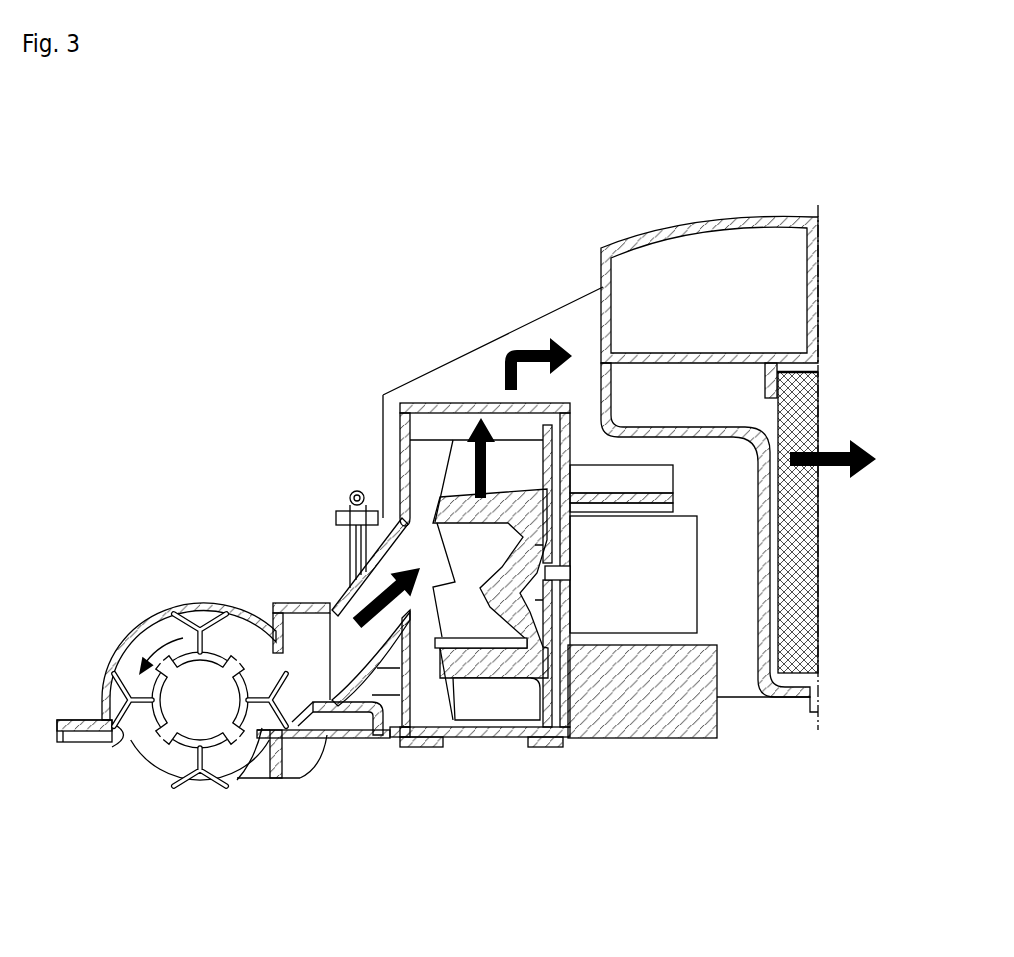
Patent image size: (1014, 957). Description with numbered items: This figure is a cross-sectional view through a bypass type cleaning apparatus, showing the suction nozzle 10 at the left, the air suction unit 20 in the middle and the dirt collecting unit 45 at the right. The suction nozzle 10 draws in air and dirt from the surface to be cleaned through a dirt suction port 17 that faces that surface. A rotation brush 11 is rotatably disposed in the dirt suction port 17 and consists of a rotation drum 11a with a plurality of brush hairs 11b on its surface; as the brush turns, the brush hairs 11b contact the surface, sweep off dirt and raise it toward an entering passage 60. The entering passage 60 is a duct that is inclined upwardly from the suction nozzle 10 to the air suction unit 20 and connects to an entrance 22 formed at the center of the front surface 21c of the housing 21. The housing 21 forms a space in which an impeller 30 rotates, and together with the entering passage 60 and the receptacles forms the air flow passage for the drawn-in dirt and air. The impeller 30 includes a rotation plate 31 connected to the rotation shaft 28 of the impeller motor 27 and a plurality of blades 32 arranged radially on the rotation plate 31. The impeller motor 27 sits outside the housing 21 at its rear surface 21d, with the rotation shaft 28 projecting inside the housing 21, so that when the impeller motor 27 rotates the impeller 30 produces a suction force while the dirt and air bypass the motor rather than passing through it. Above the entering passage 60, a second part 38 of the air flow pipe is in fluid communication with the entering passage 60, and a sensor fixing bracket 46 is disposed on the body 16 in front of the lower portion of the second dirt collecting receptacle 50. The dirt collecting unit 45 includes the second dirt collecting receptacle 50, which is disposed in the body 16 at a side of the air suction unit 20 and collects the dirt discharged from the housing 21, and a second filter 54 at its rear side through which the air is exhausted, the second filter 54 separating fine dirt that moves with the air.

The suction nozzle 10 is at (103, 631).
The rotation brush 11 is at (200, 752).
The rotation drum 11a is at (185, 718).
The brush hairs 11b is at (190, 782).
The body 16 is at (498, 340).
The dirt suction port 17 is at (122, 742).
The air suction unit 20 is at (582, 553).
The housing 21 is at (470, 410).
The front surface 21c is at (408, 435).
The rear surface 21d is at (578, 425).
The entrance 22 is at (396, 518).
The impeller motor 27 is at (683, 571).
The rotation shaft 28 is at (558, 575).
The impeller 30 is at (498, 637).
The rotation plate 31 is at (546, 722).
The blades 32 is at (484, 710).
The second part 38 is at (350, 494).
The dirt collecting unit 45 is at (734, 401).
The sensor fixing bracket 46 is at (377, 690).
The second dirt collecting receptacle 50 is at (655, 208).
The second filter 54 is at (800, 410).
The entering passage 60 is at (324, 570).